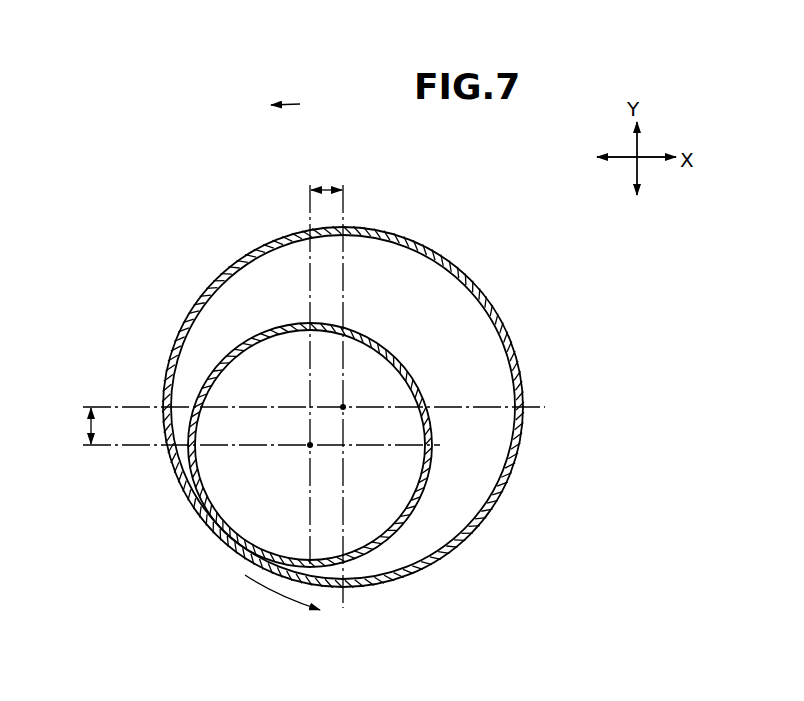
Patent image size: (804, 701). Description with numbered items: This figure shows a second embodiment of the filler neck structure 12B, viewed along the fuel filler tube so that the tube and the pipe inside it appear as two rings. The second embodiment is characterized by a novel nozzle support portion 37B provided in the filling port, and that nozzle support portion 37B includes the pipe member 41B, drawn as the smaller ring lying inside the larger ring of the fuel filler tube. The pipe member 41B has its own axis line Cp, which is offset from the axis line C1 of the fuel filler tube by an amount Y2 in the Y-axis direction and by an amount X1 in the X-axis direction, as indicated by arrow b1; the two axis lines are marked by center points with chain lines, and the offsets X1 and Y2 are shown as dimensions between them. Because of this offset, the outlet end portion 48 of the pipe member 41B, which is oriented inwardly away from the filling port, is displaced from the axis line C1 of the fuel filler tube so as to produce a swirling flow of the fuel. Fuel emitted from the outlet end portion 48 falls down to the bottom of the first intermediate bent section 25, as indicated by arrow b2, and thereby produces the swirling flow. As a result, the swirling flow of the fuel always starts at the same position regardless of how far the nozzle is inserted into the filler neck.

The filler neck structure 12B is at (209, 292).
The first intermediate bent section 25 is at (384, 228).
The nozzle support portion 37B is at (208, 353).
The pipe member 41B is at (275, 324).
The outlet end portion 48 is at (400, 362).
The axis line of the fuel filler tube C1 is at (343, 407).
The axis line of the pipe member Cp is at (309, 446).
The offset amount in the X-axis direction X1 is at (327, 173).
The offset amount in the Y-axis direction Y2 is at (69, 426).
The arrow indicating the offset direction b1 is at (294, 91).
The arrow indicating fuel flow b2 is at (287, 610).